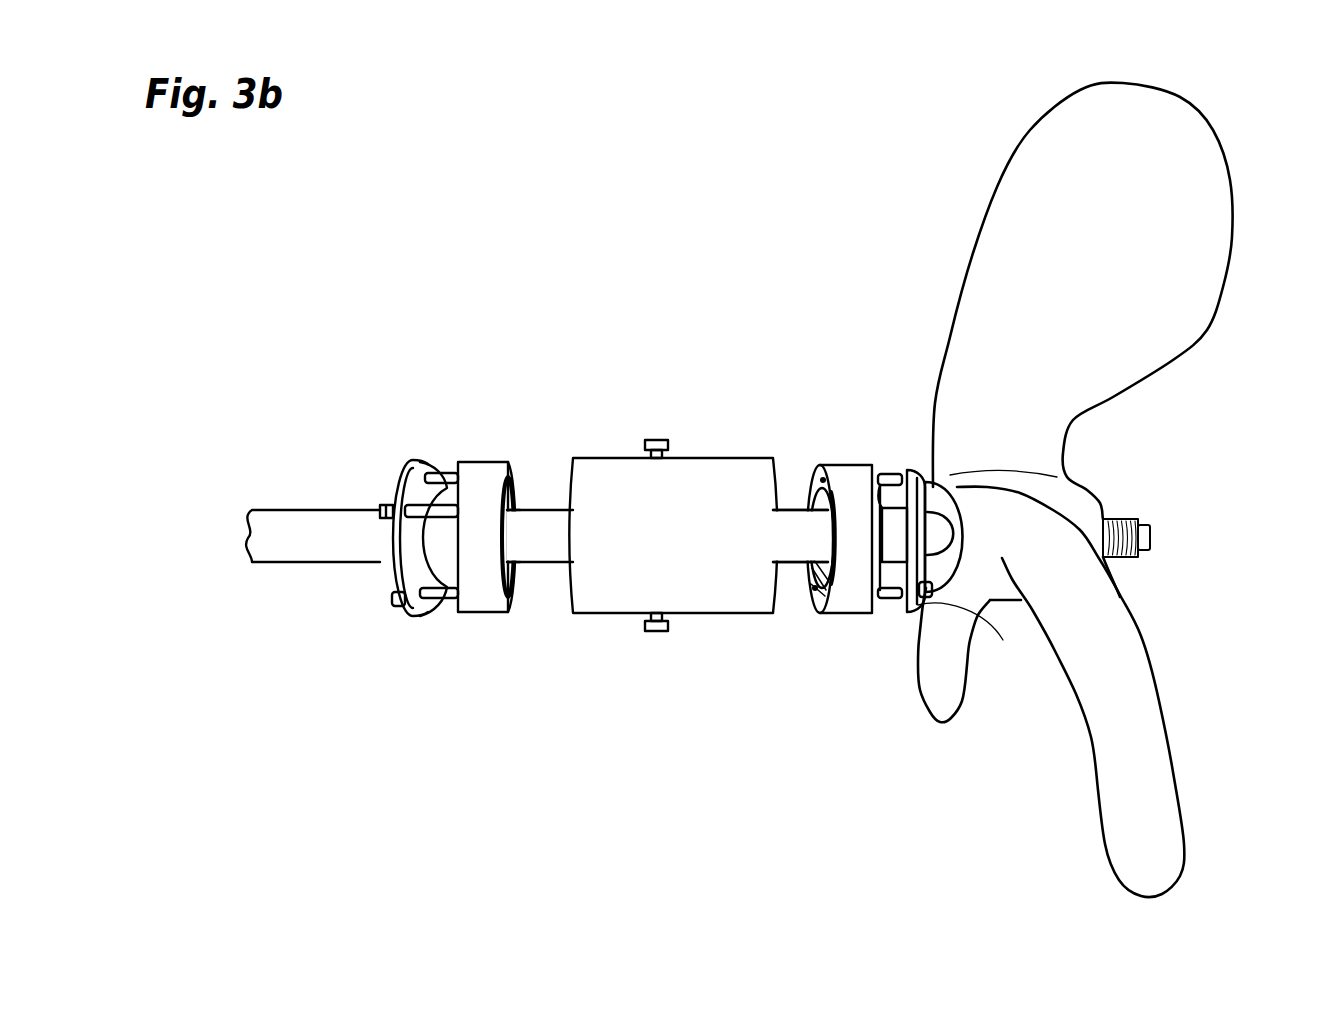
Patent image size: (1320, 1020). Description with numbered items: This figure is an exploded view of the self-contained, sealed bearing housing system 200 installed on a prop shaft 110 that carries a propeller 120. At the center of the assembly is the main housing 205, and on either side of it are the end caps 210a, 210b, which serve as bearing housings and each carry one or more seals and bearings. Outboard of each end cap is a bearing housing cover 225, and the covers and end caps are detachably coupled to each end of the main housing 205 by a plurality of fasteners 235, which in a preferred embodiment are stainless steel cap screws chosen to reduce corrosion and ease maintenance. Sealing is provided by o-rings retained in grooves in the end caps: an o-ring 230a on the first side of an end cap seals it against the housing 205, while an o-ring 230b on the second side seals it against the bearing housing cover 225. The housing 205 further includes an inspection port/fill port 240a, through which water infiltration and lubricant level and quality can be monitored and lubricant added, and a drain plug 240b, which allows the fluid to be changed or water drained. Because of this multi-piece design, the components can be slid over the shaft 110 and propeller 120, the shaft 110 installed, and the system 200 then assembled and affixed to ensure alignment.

The sealed bearing housing system 200 is at (384, 250).
The prop shaft 110 is at (297, 508).
The propeller 120 is at (990, 205).
The main housing 205 is at (670, 521).
The end cap 210a is at (816, 542).
The end cap 210b is at (514, 517).
The bearing housing cover 225 is at (433, 460).
The o-ring 230a is at (515, 580).
The o-ring 230b is at (808, 583).
The fasteners 235 is at (396, 603).
The inspection port/fill port 240a is at (655, 440).
The drain plug 240b is at (655, 631).